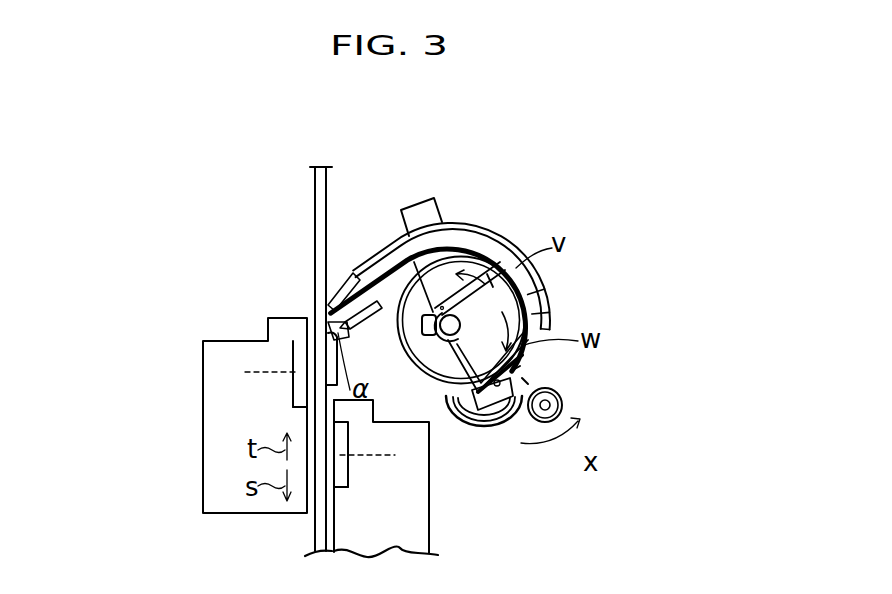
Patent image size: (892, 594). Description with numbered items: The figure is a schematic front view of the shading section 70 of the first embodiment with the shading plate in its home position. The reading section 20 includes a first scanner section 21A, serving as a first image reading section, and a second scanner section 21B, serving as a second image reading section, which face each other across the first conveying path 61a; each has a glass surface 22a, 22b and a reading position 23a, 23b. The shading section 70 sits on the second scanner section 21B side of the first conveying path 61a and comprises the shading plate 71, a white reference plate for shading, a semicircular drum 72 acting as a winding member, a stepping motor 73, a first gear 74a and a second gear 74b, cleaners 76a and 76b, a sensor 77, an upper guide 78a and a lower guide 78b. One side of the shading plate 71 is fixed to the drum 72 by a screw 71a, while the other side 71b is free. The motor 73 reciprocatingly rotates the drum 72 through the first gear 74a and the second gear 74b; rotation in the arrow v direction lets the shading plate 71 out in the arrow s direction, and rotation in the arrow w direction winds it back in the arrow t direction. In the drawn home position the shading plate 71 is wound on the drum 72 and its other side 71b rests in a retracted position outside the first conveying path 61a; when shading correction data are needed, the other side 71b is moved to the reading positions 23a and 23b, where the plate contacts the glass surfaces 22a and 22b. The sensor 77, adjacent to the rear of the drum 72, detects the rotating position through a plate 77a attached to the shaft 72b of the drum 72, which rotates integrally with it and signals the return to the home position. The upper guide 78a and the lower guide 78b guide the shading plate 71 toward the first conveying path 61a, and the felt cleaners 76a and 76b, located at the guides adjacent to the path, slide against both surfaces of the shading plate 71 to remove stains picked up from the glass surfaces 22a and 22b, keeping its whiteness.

The reading section 20 is at (133, 442).
The first scanner section 21A is at (203, 385).
The second scanner section 21B is at (430, 518).
The glass surface 22a is at (291, 397).
The glass surface 22b is at (350, 474).
The reading position 23a is at (298, 372).
The reading position 23b is at (342, 452).
The first conveying path 61a is at (323, 526).
The shading section 70 is at (546, 206).
The shading plate 71 is at (548, 306).
The screw 71a is at (527, 385).
The other side 71b is at (329, 319).
The drum 72 is at (532, 296).
The shaft 72b is at (457, 358).
The motor 73 is at (563, 405).
The first gear 74a is at (493, 430).
The second gear 74b is at (424, 375).
The cleaner 76a is at (337, 284).
The cleaner 76b is at (365, 270).
The sensor 77 is at (403, 209).
The plate 77a is at (527, 366).
The upper guide 78a is at (363, 266).
The lower guide 78b is at (352, 338).